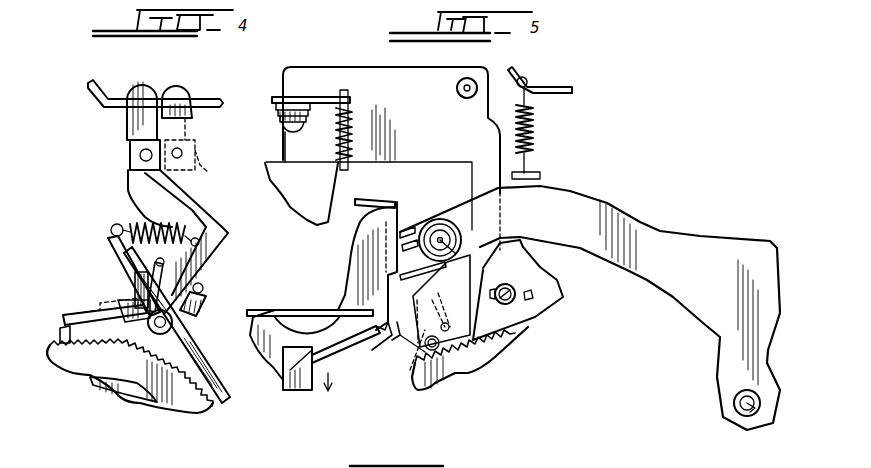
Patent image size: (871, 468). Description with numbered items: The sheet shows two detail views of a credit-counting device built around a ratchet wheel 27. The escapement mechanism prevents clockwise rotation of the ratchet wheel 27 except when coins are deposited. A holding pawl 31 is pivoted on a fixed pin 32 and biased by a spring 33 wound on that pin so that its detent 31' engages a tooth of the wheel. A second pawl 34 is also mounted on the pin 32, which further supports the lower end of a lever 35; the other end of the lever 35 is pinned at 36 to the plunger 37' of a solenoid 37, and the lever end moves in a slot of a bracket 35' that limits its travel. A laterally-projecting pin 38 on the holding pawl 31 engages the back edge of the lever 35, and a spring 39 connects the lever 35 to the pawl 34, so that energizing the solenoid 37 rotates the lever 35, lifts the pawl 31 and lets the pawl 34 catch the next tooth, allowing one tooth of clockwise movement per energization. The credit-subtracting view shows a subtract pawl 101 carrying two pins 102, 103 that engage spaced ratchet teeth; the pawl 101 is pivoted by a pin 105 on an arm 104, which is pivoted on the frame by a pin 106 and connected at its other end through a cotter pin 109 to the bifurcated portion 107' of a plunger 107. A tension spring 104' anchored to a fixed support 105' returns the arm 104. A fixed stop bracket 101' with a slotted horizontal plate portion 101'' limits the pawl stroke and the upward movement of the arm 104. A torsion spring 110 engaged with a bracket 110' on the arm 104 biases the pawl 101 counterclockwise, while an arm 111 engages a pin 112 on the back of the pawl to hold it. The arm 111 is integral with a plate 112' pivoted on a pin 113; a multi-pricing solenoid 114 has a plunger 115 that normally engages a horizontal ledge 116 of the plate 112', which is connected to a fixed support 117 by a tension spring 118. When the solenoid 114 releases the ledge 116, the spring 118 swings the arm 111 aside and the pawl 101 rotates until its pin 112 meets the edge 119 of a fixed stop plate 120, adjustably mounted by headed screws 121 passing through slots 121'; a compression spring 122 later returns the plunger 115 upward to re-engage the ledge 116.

In FIG. 4, the ratchet wheel 27 is at (85, 364).
In FIG. 5, the ratchet wheel 27 is at (465, 363).
In FIG. 4, the holding pawl 31 is at (83, 320).
In FIG. 4, the detent 31' is at (113, 372).
In FIG. 4, the fixed pin 32 is at (132, 303).
In FIG. 4, the spring 33 is at (105, 308).
In FIG. 4, the second pawl 34 is at (112, 250).
In FIG. 4, the lever 35 is at (158, 241).
In FIG. 4, the bracket 35' is at (155, 99).
In FIG. 4, the pin 36 is at (130, 152).
In FIG. 4, the solenoid 37 is at (131, 191).
In FIG. 4, the plunger 37' is at (201, 158).
In FIG. 4, the laterally-projecting pin 38 is at (205, 285).
In FIG. 4, the spring 39 is at (138, 222).
In FIG. 5, the subtract pawl 101 is at (396, 356).
In FIG. 5, the fixed stop bracket 101' is at (395, 318).
In FIG. 5, the horizontal plate portion 101'' is at (307, 306).
In FIG. 5, the pin 102 is at (440, 320).
In FIG. 5, the pin 103 is at (427, 344).
In FIG. 5, the arm 104 is at (510, 308).
In FIG. 5, the tension spring 104' is at (424, 201).
In FIG. 5, the pin 105 is at (440, 223).
In FIG. 5, the fixed support 105' is at (556, 75).
In FIG. 5, the pin 106 is at (738, 402).
In FIG. 5, the plunger 107 is at (307, 385).
In FIG. 5, the bifurcated portion 107' is at (289, 383).
In FIG. 5, the cotter pin 109 is at (313, 355).
In FIG. 5, the torsion spring 110 is at (409, 334).
In FIG. 5, the bracket 110' is at (381, 226).
In FIG. 5, the arm 111 is at (505, 212).
In FIG. 5, the pin 112 is at (402, 364).
In FIG. 5, the plate 112' is at (399, 132).
In FIG. 5, the pin 113 is at (457, 88).
In FIG. 5, the multi-pricing solenoid 114 is at (322, 197).
In FIG. 5, the plunger 115 is at (282, 128).
In FIG. 5, the horizontal ledge 116 is at (322, 97).
In FIG. 5, the fixed support 117 is at (428, 158).
In FIG. 5, the tension spring 118 is at (348, 115).
In FIG. 5, the edge 119 is at (448, 295).
In FIG. 5, the fixed stop plate 120 is at (553, 311).
In FIG. 5, the headed screws 121 is at (518, 290).
In FIG. 5, the slots 121' is at (555, 283).
In FIG. 5, the compression spring 122 is at (280, 110).